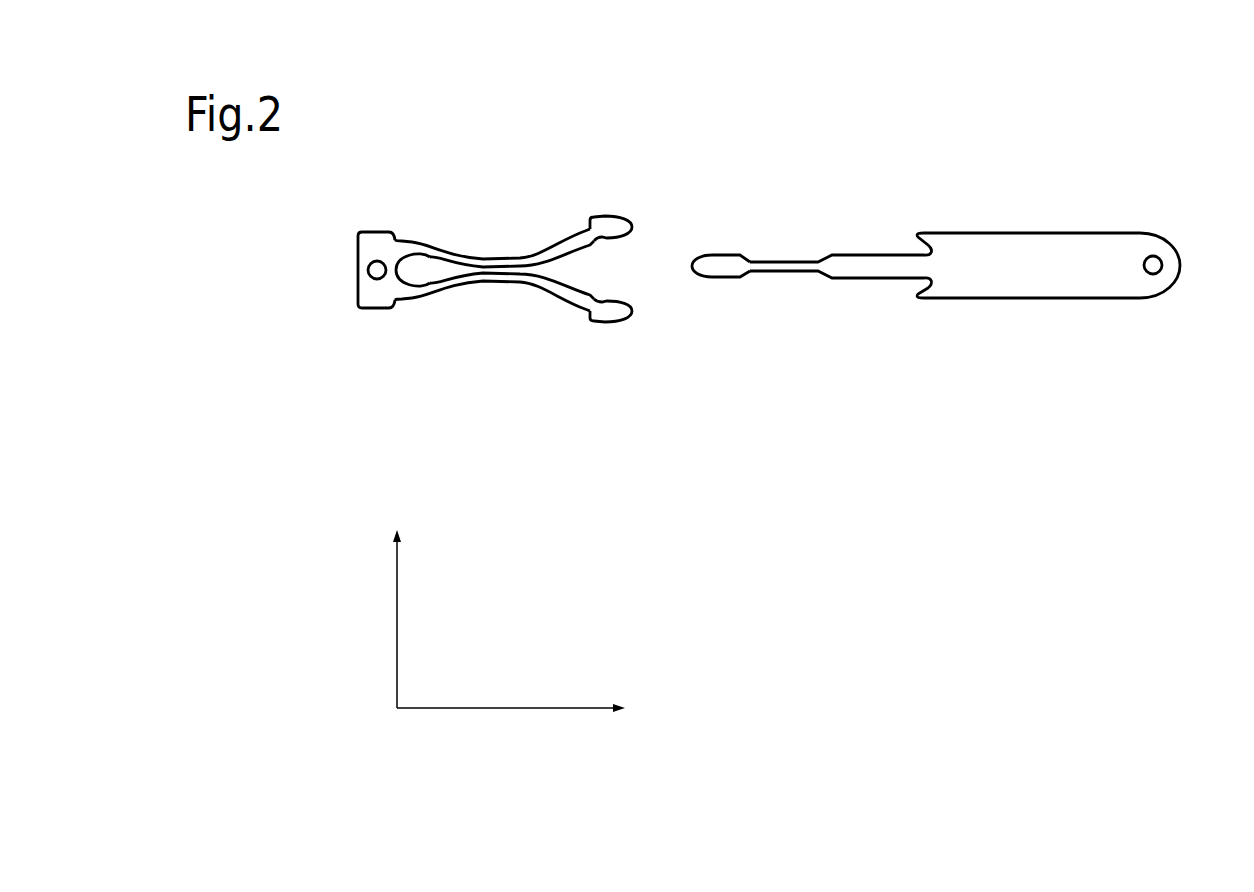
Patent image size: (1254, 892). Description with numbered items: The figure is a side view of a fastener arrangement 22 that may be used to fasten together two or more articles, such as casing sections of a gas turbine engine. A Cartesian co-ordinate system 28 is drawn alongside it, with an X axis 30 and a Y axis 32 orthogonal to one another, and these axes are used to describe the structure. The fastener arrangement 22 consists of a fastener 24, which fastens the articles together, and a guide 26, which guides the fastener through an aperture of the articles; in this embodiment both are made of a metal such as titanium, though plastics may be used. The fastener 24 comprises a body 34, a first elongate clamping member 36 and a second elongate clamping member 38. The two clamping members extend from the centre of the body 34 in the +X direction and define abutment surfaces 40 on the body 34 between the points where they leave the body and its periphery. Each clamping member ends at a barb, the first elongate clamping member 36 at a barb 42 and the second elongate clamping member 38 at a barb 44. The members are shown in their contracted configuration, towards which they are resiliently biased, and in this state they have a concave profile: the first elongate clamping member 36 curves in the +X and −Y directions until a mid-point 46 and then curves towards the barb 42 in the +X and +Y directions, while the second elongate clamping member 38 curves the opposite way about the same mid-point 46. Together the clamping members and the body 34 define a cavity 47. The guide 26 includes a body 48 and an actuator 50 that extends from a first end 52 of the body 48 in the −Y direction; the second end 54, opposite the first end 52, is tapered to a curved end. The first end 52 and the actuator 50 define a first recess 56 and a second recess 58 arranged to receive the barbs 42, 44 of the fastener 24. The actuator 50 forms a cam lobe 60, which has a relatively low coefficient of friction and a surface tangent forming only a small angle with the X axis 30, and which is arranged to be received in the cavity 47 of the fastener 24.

The fastener arrangement 22 is at (952, 326).
The fastener 24 is at (480, 288).
The guide 26 is at (1031, 243).
The Cartesian co-ordinate system 28 is at (500, 676).
The X axis 30 is at (532, 705).
The Y axis 32 is at (398, 612).
The body 34 is at (357, 262).
The first elongate clamping member 36 is at (548, 235).
The second elongate clamping member 38 is at (556, 298).
The abutment surfaces 40 is at (393, 232).
The barb 42 is at (603, 230).
The barb 44 is at (605, 312).
The mid-point 46 is at (484, 258).
The cavity 47 is at (422, 272).
The body 48 is at (1063, 247).
The actuator 50 is at (836, 240).
The first end 52 is at (903, 229).
The second end 54 is at (1179, 228).
The first recess 56 is at (902, 242).
The second recess 58 is at (902, 289).
The cam lobe 60 is at (725, 295).